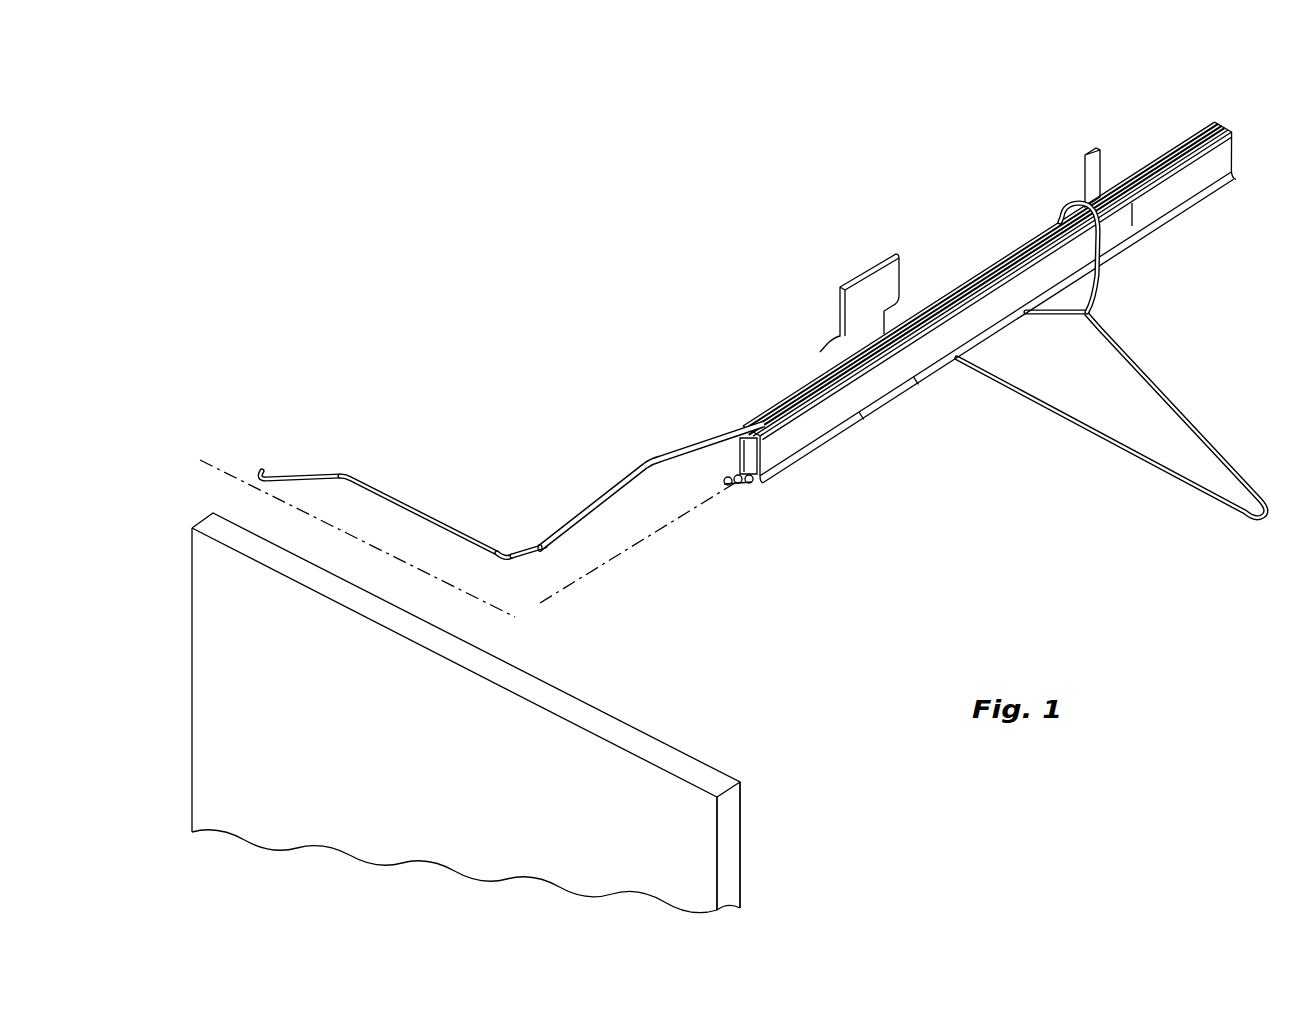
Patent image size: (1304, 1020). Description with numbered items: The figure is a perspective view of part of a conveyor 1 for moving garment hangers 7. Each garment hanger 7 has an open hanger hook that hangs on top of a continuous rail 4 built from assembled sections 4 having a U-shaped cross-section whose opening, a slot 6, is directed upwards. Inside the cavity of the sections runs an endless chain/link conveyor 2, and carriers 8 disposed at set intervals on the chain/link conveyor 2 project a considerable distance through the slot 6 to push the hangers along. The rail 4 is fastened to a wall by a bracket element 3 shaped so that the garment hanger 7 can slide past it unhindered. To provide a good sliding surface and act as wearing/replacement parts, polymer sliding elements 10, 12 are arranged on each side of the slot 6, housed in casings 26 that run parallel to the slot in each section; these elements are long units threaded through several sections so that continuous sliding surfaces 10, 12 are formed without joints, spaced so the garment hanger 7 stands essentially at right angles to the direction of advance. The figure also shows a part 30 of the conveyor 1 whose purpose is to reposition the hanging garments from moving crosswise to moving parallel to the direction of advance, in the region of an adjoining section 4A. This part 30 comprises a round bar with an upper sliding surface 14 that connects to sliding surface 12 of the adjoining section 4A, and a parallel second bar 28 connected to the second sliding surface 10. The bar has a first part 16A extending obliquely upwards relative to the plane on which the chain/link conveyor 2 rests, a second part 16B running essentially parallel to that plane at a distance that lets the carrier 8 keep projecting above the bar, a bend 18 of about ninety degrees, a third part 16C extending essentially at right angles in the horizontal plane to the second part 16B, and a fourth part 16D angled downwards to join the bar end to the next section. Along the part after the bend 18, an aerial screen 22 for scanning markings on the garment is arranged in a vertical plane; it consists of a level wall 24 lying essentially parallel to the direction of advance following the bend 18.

The conveyor 1 is at (688, 304).
The chain/link conveyor 2 is at (728, 490).
The bracket element 3 is at (866, 285).
The rail 4 is at (1022, 281).
The adjoining section 4A is at (822, 420).
The slot 6 is at (1222, 108).
The garment hanger 7 is at (1140, 453).
The carrier 8 is at (1097, 175).
The sliding element 10 is at (1227, 130).
The sliding element 12 is at (1157, 153).
The upper sliding surface 14 is at (617, 483).
The first part of the bar 16A is at (675, 450).
The second part of the bar 16B is at (560, 523).
The third part of the bar 16C is at (382, 487).
The fourth part of the bar 16D is at (308, 473).
The bend 18 is at (507, 552).
The aerial screen 22 is at (770, 862).
The level wall 24 is at (742, 820).
The casing 26 is at (755, 485).
The second bar 28 is at (593, 513).
The part of the conveyor 30 is at (563, 629).